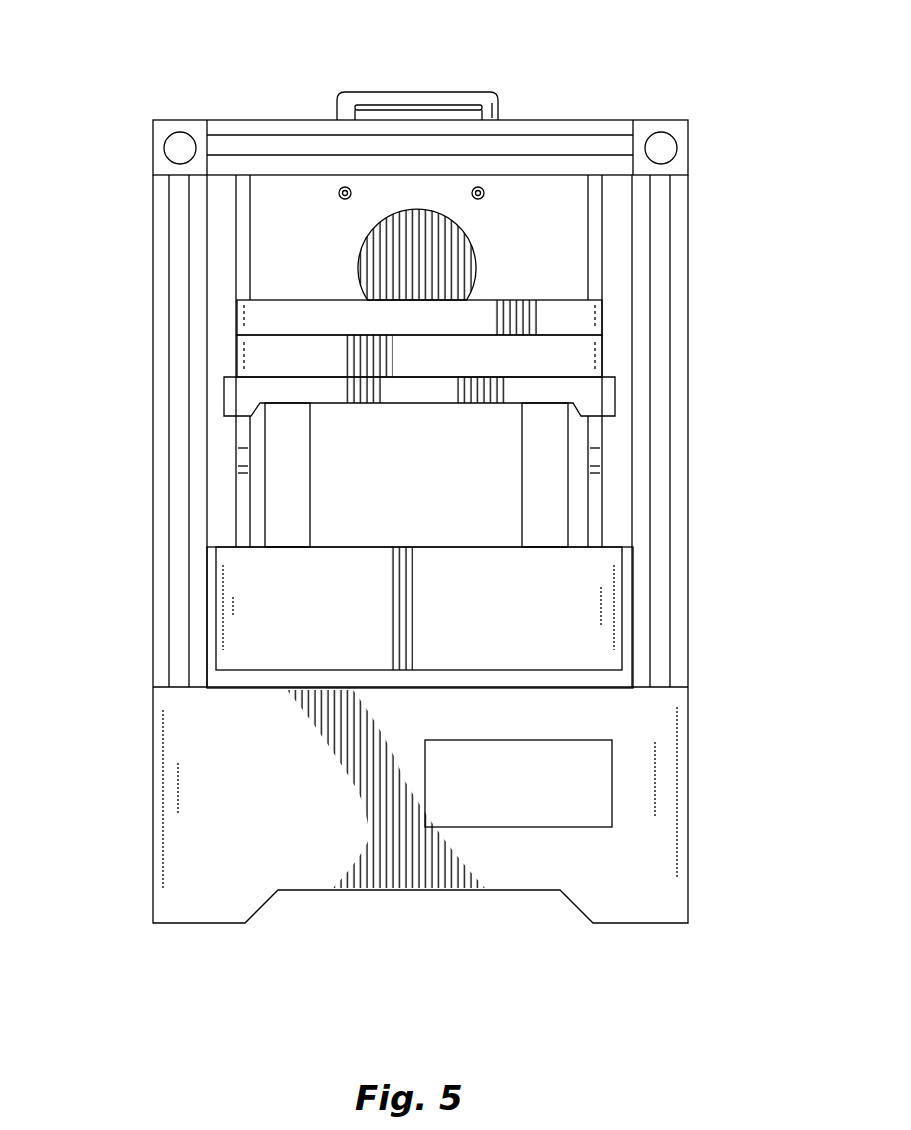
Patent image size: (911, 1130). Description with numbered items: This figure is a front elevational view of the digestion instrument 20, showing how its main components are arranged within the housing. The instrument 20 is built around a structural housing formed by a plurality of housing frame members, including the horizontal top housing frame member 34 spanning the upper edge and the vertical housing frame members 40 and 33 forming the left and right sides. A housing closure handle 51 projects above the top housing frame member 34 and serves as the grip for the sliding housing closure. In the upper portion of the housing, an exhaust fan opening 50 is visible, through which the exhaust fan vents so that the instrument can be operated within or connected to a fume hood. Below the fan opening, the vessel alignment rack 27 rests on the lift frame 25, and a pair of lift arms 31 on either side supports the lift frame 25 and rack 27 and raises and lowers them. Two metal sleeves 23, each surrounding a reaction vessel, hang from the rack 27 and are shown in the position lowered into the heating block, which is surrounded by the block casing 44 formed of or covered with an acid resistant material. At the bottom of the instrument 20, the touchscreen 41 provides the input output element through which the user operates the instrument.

The digestion instrument 20 is at (700, 98).
The housing closure handle 51 is at (368, 98).
The housing frame member 34 is at (603, 82).
The housing frame member 40 is at (160, 218).
The housing frame member 33 is at (664, 393).
The exhaust fan opening 50 is at (455, 276).
The vessel alignment rack 27 is at (520, 372).
The lift frame 25 is at (437, 397).
The lift arms 31 is at (245, 443).
The metal sleeve 23 is at (303, 498).
The block casing 44 is at (515, 622).
The touchscreen 41 is at (565, 809).